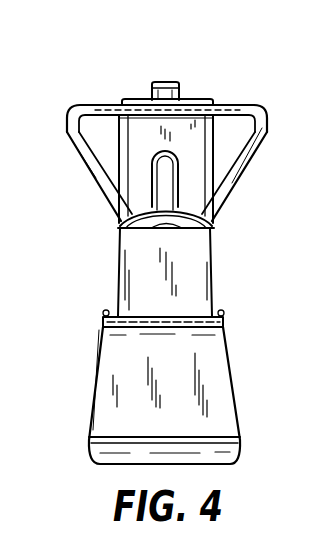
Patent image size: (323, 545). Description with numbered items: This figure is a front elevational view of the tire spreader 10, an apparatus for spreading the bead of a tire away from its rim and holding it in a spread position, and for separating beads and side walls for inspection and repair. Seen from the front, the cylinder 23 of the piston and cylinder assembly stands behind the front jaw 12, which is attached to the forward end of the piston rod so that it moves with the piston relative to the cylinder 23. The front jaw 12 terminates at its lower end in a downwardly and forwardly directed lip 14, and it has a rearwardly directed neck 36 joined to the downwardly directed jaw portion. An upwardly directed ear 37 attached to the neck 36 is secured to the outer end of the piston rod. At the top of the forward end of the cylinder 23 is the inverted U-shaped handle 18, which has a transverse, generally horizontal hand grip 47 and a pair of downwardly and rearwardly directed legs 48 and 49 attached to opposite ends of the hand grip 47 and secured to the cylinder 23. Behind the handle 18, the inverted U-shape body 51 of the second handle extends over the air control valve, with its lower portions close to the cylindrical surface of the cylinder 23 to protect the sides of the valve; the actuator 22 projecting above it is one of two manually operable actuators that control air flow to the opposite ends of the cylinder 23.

The tire spreader 10 is at (206, 66).
The front jaw 12 is at (125, 370).
The lip 14 is at (122, 446).
The inverted U-shaped handle 18 is at (86, 104).
The actuator 22 is at (167, 81).
The cylinder 23 is at (216, 211).
The neck 36 is at (218, 313).
The ear 37 is at (143, 252).
The hand grip 47 is at (236, 108).
The leg 48 is at (240, 172).
The leg 49 is at (82, 152).
The inverted U-shape body 51 is at (210, 137).